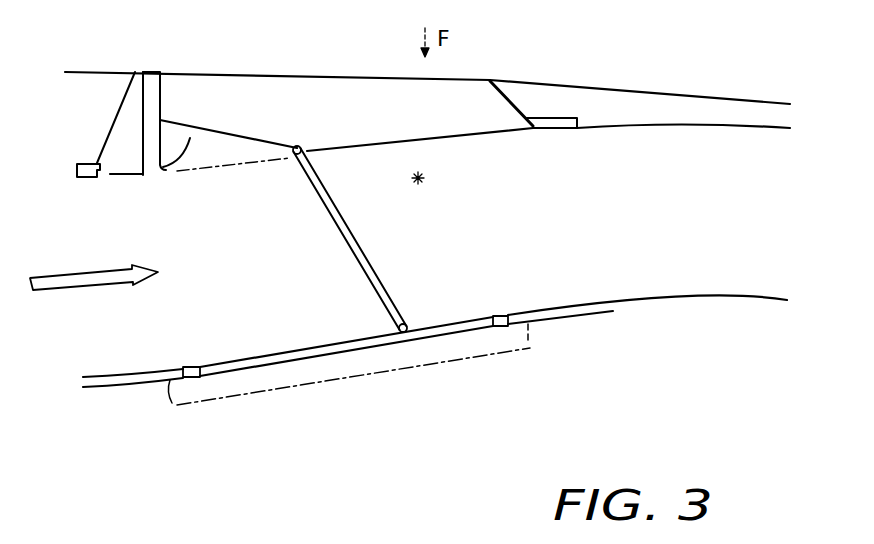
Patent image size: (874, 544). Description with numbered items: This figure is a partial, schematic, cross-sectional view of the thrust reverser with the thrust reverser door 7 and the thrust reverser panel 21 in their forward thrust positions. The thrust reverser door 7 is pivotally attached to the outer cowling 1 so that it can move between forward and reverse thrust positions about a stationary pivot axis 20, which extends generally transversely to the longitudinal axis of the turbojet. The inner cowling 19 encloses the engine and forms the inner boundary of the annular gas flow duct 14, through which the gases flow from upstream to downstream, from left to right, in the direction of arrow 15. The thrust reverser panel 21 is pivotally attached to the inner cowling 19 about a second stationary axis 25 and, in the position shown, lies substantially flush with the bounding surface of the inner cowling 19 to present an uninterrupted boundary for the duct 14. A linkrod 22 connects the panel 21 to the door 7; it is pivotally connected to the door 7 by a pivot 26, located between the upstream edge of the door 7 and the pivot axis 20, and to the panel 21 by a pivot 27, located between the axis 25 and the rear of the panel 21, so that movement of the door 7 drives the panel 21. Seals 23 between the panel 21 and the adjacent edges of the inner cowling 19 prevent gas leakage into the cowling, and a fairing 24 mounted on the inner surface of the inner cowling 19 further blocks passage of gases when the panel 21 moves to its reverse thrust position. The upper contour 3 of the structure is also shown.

The outer cowling 1 is at (128, 98).
The nacelle fairing 3 is at (662, 100).
The thrust reverser door 7 is at (223, 78).
The annular gas flow duct 14 is at (109, 227).
The arrow indicating gas flow direction 15 is at (60, 282).
The inner cowling 19 is at (610, 292).
The stationary pivot axis 20 is at (420, 182).
The thrust reverser panel 21 is at (305, 357).
The linkrod 22 is at (335, 220).
The seals 23 is at (505, 326).
The fairing 24 is at (469, 364).
The second stationary axis 25 is at (220, 378).
The pivot 26 is at (299, 145).
The pivot 27 is at (408, 313).